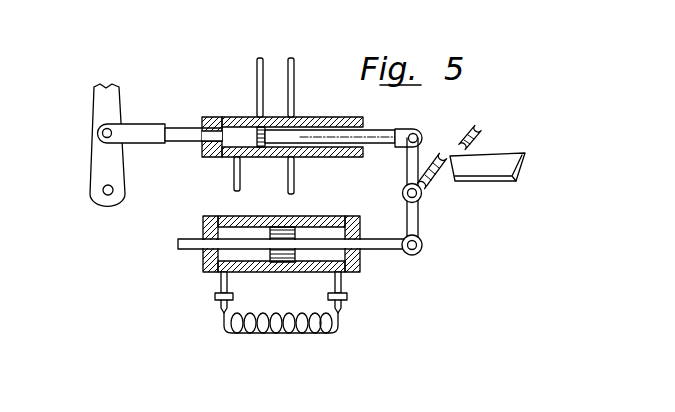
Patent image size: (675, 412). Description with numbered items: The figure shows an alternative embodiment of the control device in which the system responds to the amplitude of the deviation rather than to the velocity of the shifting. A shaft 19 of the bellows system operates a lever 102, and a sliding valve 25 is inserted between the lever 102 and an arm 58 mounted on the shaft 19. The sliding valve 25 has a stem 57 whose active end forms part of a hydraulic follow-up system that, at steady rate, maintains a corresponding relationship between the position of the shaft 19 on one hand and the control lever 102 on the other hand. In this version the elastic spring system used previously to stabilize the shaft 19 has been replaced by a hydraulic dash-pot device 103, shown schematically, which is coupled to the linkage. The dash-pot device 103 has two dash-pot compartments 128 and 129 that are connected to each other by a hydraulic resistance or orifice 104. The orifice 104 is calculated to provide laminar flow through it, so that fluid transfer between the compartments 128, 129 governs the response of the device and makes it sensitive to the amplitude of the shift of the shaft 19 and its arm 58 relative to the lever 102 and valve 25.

The lever 102 is at (106, 103).
The sliding valve 25 is at (312, 118).
The stem 57 is at (373, 132).
The arm 58 is at (407, 172).
The shaft 19 is at (427, 183).
The dash-pot compartment 128 is at (226, 232).
The dash-pot compartment 129 is at (324, 232).
The hydraulic dash-pot device 103 is at (352, 273).
The hydraulic resistance or orifice 104 is at (285, 333).